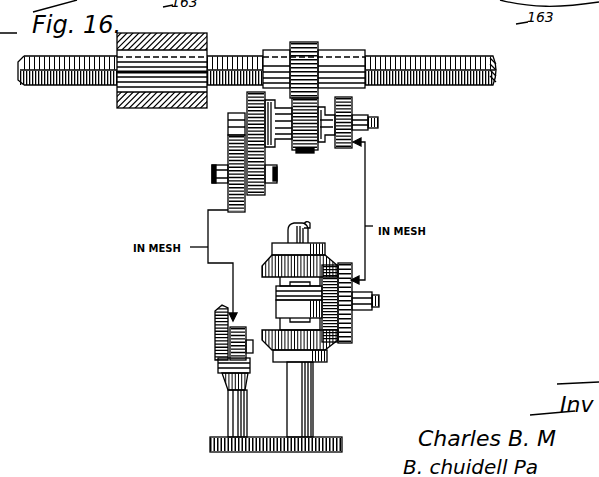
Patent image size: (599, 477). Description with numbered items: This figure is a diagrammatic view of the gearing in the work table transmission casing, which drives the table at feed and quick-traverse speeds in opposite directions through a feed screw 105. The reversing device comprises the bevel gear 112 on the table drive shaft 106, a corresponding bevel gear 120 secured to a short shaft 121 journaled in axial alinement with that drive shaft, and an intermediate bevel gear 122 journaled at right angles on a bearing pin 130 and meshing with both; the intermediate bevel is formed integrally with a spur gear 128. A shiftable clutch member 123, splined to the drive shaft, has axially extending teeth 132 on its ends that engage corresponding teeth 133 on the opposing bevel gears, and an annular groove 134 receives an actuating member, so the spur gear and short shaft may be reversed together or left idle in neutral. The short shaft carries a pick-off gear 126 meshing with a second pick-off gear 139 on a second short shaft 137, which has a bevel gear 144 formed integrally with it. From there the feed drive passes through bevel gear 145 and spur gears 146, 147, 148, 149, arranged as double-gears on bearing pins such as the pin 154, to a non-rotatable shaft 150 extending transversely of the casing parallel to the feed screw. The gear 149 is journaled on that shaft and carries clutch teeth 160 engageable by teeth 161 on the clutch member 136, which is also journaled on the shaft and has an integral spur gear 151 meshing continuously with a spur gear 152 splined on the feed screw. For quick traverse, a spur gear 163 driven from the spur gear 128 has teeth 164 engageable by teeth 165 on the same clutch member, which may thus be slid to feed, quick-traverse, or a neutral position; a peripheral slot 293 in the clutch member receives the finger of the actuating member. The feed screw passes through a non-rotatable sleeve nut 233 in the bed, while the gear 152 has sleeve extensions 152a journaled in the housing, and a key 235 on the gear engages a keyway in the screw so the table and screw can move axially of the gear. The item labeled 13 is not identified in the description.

The sleeve nut 233 is at (112, 93).
The bearing block 13 is at (126, 108).
The peripheral slot 293 is at (287, 83).
The sleeve extensions 152a is at (275, 55).
The spur gear 152 is at (311, 42).
The key 235 is at (478, 38).
The feed screw 105 is at (463, 93).
The clutch teeth 160 is at (228, 140).
The spur gear 148 is at (228, 189).
The spur gear 149 is at (243, 113).
The bearing pin 154 is at (228, 168).
The spur gear 147 is at (228, 206).
The clutch teeth 161 is at (287, 150).
The clutch member 136 is at (298, 147).
The spur gear 151 is at (305, 153).
The teeth 164 is at (327, 104).
The teeth 165 is at (320, 102).
The spur gear 163 is at (368, 142).
The non-rotatable shaft 150 is at (365, 113).
The table drive shaft 106 is at (280, 233).
The bevel gear 112 is at (270, 266).
The teeth 133 is at (280, 280).
The axially extending teeth 132 is at (280, 290).
The annular groove 134 is at (284, 308).
The clutch member 123 is at (280, 306).
The bevel gear 120 is at (272, 355).
The short shaft 121 is at (302, 403).
The pick-off gear 126 is at (330, 437).
The pick-off gear 139 is at (220, 437).
The intermediate bevel gear 122 is at (352, 333).
The spur gear 128 is at (352, 320).
The bearing pin 130 is at (366, 295).
The spur gear 146 is at (212, 355).
The bevel gear 145 is at (218, 368).
The bevel gear 144 is at (227, 378).
The second short shaft 137 is at (230, 410).